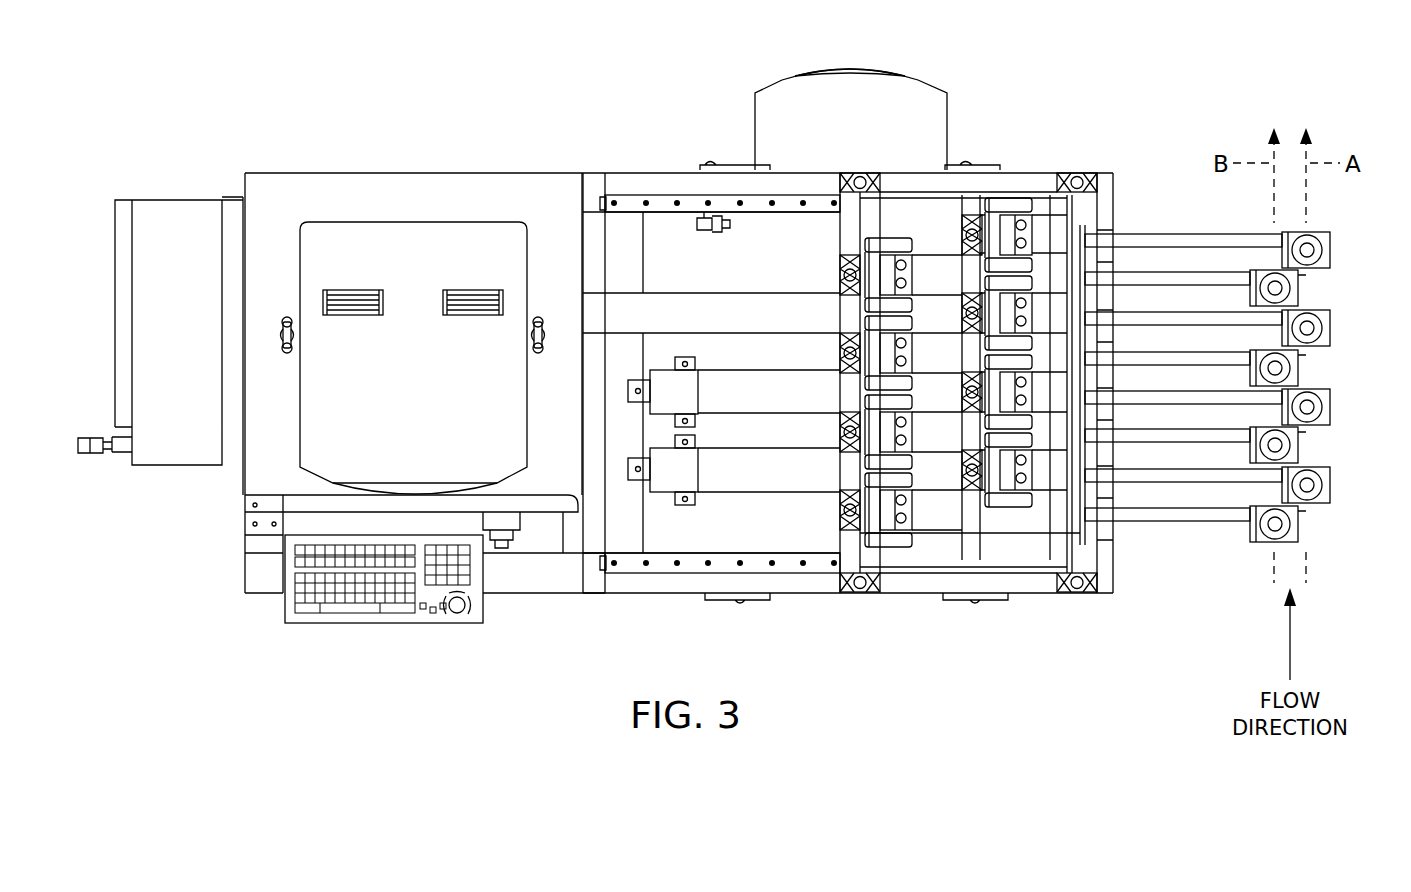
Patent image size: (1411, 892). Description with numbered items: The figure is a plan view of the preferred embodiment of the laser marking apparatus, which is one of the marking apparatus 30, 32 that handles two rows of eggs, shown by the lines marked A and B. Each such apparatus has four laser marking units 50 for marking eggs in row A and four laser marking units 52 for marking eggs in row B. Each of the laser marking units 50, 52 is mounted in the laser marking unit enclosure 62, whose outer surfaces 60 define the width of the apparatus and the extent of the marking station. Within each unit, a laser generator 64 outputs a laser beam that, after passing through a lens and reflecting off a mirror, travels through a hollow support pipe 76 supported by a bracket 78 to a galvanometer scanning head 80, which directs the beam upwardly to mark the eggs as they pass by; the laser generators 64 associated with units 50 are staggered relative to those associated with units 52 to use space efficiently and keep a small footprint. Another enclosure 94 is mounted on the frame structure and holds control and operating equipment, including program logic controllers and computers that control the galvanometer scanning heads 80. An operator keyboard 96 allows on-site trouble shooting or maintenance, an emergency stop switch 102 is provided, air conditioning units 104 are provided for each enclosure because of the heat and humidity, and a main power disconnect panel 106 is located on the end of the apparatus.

The marking apparatus 30 is at (1028, 38).
The left marking apparatus 32 is at (743, 371).
The laser marking units 50 is at (1340, 238).
The laser marking units 52 is at (1307, 292).
The outer surfaces 60 is at (1030, 172).
The laser marking unit enclosure 62 is at (1105, 562).
The laser generator 64 is at (993, 228).
The hollow support pipe 76 is at (1150, 248).
The bracket 78 is at (1220, 318).
The galvanometer scanning head 80 is at (1300, 282).
The enclosure 94 is at (551, 193).
The operator keyboard 96 is at (385, 607).
The emergency stop switch 102 is at (512, 528).
The air conditioning units 104 is at (792, 124).
The main power disconnect panel 106 is at (179, 428).